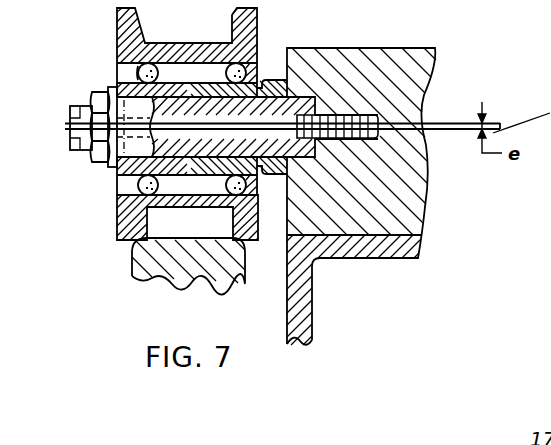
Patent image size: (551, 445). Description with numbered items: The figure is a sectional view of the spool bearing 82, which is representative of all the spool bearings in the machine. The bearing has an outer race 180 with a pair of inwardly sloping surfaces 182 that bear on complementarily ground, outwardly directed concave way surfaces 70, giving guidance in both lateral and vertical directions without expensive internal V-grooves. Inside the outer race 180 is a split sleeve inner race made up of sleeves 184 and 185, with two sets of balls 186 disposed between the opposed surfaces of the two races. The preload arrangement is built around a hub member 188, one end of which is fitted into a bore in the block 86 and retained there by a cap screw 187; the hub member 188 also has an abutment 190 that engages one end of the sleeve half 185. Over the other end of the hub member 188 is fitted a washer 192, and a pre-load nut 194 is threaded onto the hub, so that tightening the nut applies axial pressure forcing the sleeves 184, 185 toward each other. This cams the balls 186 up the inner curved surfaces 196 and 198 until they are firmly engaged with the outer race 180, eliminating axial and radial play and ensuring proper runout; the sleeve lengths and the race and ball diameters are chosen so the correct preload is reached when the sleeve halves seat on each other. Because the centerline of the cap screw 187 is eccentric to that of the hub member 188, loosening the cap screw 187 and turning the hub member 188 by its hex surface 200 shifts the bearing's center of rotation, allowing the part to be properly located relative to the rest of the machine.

The concave way surfaces 70 is at (137, 248).
The spool bearing 82 is at (104, 240).
The block 86 is at (419, 211).
The outer race 180 is at (117, 46).
The inwardly sloping surfaces 182 is at (233, 14).
The sleeve 184 is at (187, 217).
The sleeve 185 is at (118, 190).
The balls 186 is at (140, 65).
The cap screw 187 is at (70, 125).
The hub member 188 is at (135, 150).
The abutment 190 is at (258, 190).
The washer 192 is at (108, 88).
The pre-load nut 194 is at (92, 161).
The inner curved surface 196 is at (137, 72).
The inner curved surface 198 is at (258, 70).
The hex surface 200 is at (277, 72).